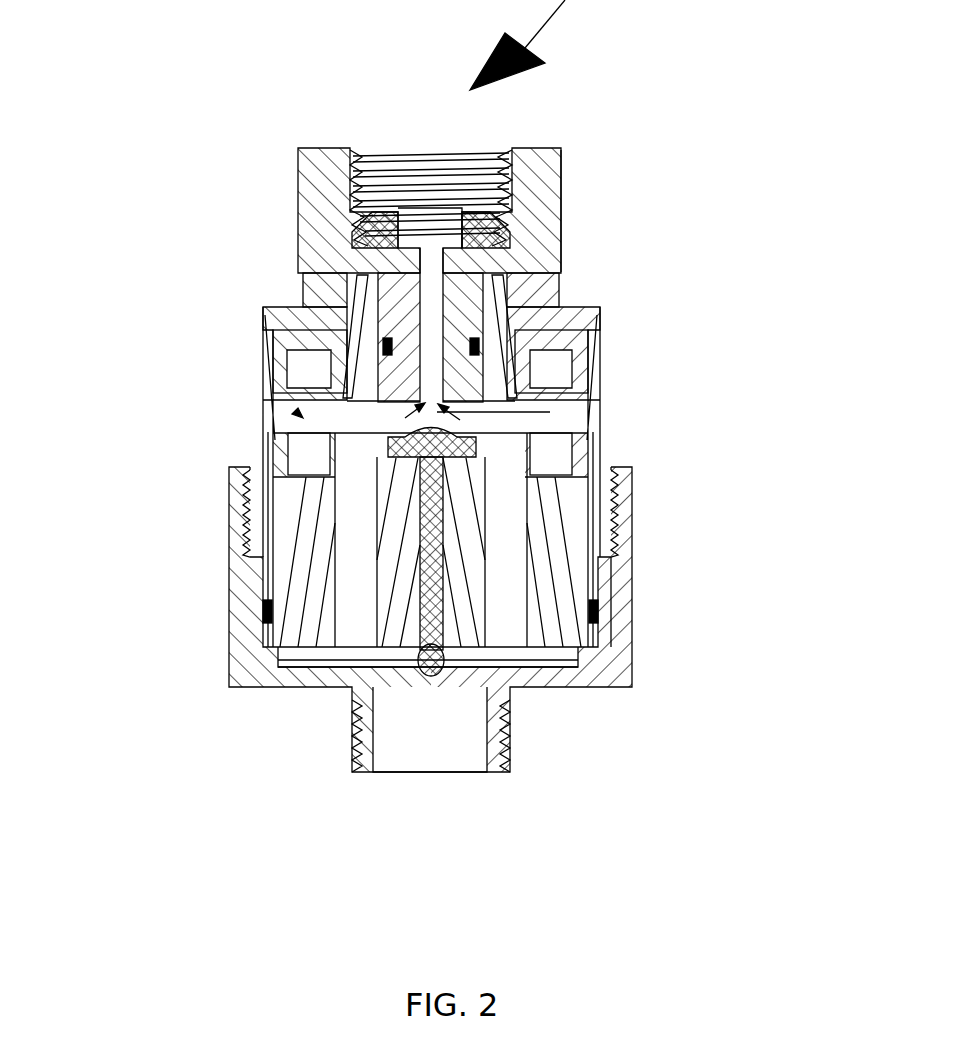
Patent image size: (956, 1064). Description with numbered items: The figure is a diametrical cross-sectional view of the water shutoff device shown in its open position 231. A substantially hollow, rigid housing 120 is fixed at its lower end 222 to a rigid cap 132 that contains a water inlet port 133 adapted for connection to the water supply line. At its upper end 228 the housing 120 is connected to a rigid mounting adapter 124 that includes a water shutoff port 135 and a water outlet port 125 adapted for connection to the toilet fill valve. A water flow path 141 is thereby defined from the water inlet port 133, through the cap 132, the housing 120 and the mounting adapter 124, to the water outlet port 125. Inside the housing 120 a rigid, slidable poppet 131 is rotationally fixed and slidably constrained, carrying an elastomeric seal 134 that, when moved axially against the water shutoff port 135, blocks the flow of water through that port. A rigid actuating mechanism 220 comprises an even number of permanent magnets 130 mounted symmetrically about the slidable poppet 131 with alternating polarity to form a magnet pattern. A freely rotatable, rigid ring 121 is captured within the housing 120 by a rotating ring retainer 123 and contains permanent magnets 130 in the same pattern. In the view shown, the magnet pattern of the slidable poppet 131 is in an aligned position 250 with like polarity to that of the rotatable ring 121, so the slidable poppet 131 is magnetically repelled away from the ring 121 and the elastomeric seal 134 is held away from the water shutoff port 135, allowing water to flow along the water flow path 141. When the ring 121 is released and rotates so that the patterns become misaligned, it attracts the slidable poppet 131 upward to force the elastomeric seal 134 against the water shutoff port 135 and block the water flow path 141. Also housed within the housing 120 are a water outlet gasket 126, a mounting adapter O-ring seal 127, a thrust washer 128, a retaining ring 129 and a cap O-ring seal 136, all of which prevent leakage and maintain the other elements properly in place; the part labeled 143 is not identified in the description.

The housing 120 is at (600, 410).
The rotatable ring 121 is at (592, 350).
The rotating ring retainer 123 is at (263, 310).
The mounting adapter 124 is at (300, 150).
The water outlet port 125 is at (430, 147).
The water outlet gasket 126 is at (562, 160).
The mounting adapter O-ring seal 127 is at (562, 250).
The thrust washer 128 is at (460, 420).
The retaining ring 129 is at (575, 475).
The permanent magnets 130 is at (290, 365).
The slidable poppet 131 is at (315, 645).
The cap 132 is at (620, 675).
The water inlet port 133 is at (445, 772).
The elastomeric seal 134 is at (402, 432).
The water shutoff port 135 is at (428, 380).
The cap O-ring seal 136 is at (262, 617).
The water flow path 141 is at (497, 630).
The support plate 143 is at (567, 653).
The actuating mechanism 220 is at (588, 375).
The lower end 222 is at (612, 557).
The upper end 228 is at (600, 307).
The open position 231 is at (303, 418).
The aligned position 250 is at (560, 414).